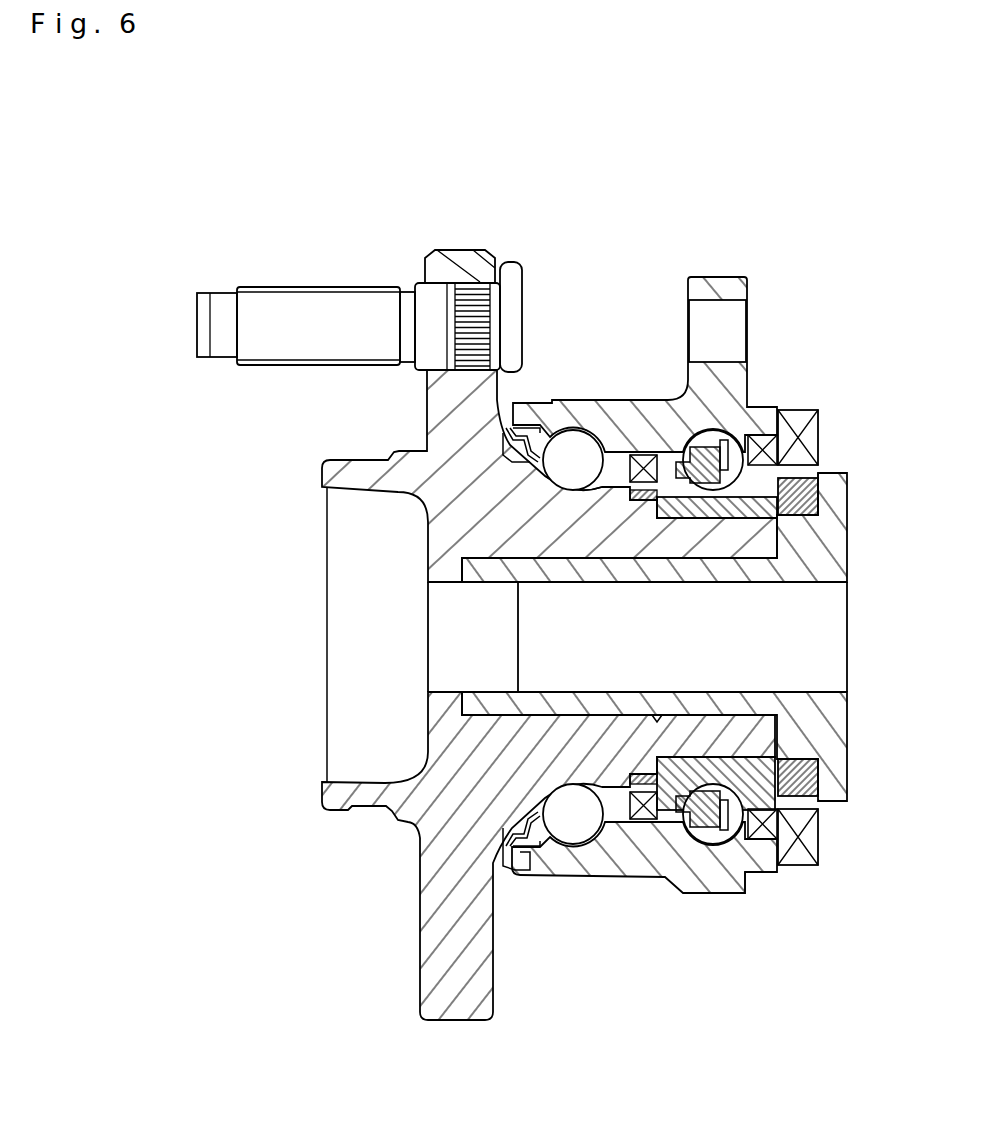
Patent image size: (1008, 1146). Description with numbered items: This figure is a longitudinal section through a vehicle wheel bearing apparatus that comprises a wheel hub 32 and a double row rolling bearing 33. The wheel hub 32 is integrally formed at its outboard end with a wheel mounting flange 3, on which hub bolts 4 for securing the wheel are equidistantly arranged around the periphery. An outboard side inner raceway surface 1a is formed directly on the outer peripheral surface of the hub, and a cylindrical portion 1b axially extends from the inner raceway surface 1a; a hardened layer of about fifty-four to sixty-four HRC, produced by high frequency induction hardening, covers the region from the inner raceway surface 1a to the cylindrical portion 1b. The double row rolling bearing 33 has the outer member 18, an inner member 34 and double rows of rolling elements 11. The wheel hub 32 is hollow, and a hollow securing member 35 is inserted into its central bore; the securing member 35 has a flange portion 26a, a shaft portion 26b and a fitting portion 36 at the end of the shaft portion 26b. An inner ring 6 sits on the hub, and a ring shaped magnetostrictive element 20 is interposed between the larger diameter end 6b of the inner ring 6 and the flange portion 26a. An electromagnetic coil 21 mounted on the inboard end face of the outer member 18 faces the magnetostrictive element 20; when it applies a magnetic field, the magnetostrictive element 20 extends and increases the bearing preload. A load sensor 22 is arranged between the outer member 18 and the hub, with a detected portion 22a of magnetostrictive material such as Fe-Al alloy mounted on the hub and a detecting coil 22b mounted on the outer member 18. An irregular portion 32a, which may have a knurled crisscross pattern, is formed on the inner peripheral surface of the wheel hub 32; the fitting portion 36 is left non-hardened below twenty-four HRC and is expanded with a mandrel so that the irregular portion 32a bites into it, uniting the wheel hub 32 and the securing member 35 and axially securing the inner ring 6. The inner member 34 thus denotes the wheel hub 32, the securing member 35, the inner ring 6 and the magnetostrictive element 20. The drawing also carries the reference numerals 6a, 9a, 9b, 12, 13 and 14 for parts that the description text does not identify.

The inner raceway surface 1a is at (573, 470).
The cylindrical portion 1b is at (717, 520).
The wheel mounting flange 3 is at (457, 262).
The hub bolts 4 is at (318, 300).
The inner ring 6 is at (765, 753).
The encoder support ring 6a is at (748, 824).
The larger diameter end 6b is at (818, 836).
The seal 9a is at (556, 403).
The flange of outer member 9b is at (728, 277).
The rolling elements 11 is at (575, 834).
The cage 12 is at (624, 822).
The seal 13 is at (524, 872).
The outer member end portion 14 is at (775, 864).
The outer member 18 is at (587, 405).
The magnetostrictive element 20 is at (810, 478).
The electromagnetic coil 21 is at (808, 408).
The load sensor 22 is at (660, 401).
The detected portion 22a is at (620, 440).
The detecting coil 22b is at (653, 440).
The flange portion 26a is at (822, 530).
The shaft portion 26b is at (657, 718).
The wheel hub 32 is at (373, 470).
The irregular portion 32a is at (462, 582).
The double row rolling bearing 33 is at (648, 290).
The inner member 34 is at (420, 548).
The securing member 35 is at (815, 566).
The fitting portion 36 is at (460, 716).